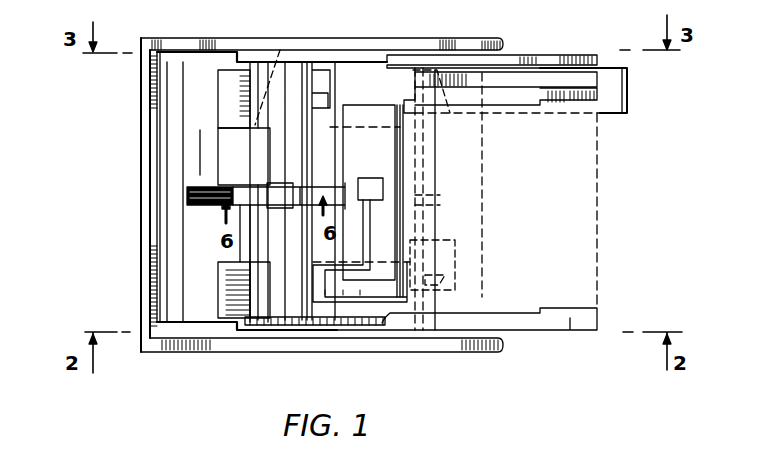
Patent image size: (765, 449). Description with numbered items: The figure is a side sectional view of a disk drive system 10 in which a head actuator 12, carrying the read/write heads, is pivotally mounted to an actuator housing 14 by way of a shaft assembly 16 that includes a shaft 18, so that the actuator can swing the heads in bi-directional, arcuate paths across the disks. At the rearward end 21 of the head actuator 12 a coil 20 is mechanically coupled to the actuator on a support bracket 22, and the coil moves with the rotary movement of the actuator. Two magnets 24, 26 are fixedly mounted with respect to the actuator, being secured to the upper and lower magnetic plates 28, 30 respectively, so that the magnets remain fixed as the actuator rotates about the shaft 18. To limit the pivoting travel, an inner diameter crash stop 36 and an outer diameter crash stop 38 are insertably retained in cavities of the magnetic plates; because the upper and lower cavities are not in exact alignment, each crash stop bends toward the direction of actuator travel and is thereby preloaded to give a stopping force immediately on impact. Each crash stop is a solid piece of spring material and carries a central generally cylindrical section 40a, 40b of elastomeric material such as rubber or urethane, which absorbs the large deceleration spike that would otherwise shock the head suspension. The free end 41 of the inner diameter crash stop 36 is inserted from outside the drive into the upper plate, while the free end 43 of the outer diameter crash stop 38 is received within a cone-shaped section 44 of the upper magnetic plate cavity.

The disk drive system 10 is at (123, 170).
The head actuator 12 is at (512, 48).
The actuator housing 14 is at (397, 48).
The shaft assembly 16 is at (358, 112).
The shaft 18 is at (400, 150).
The coil 20 is at (195, 185).
The rearward end 21 is at (221, 205).
The support bracket 22 is at (253, 207).
The magnet 24 is at (218, 128).
The magnet 26 is at (235, 262).
The upper magnetic plate 28 is at (196, 53).
The lower magnetic plate 30 is at (187, 330).
The inner diameter crash stop 36 is at (437, 128).
The outer diameter crash stop 38 is at (283, 243).
The central generally cylindrical section 40a is at (270, 183).
The central generally cylindrical section 40b is at (445, 200).
The free end 41 is at (423, 62).
The free end 43 is at (280, 47).
The cone-shaped section 44 is at (288, 60).